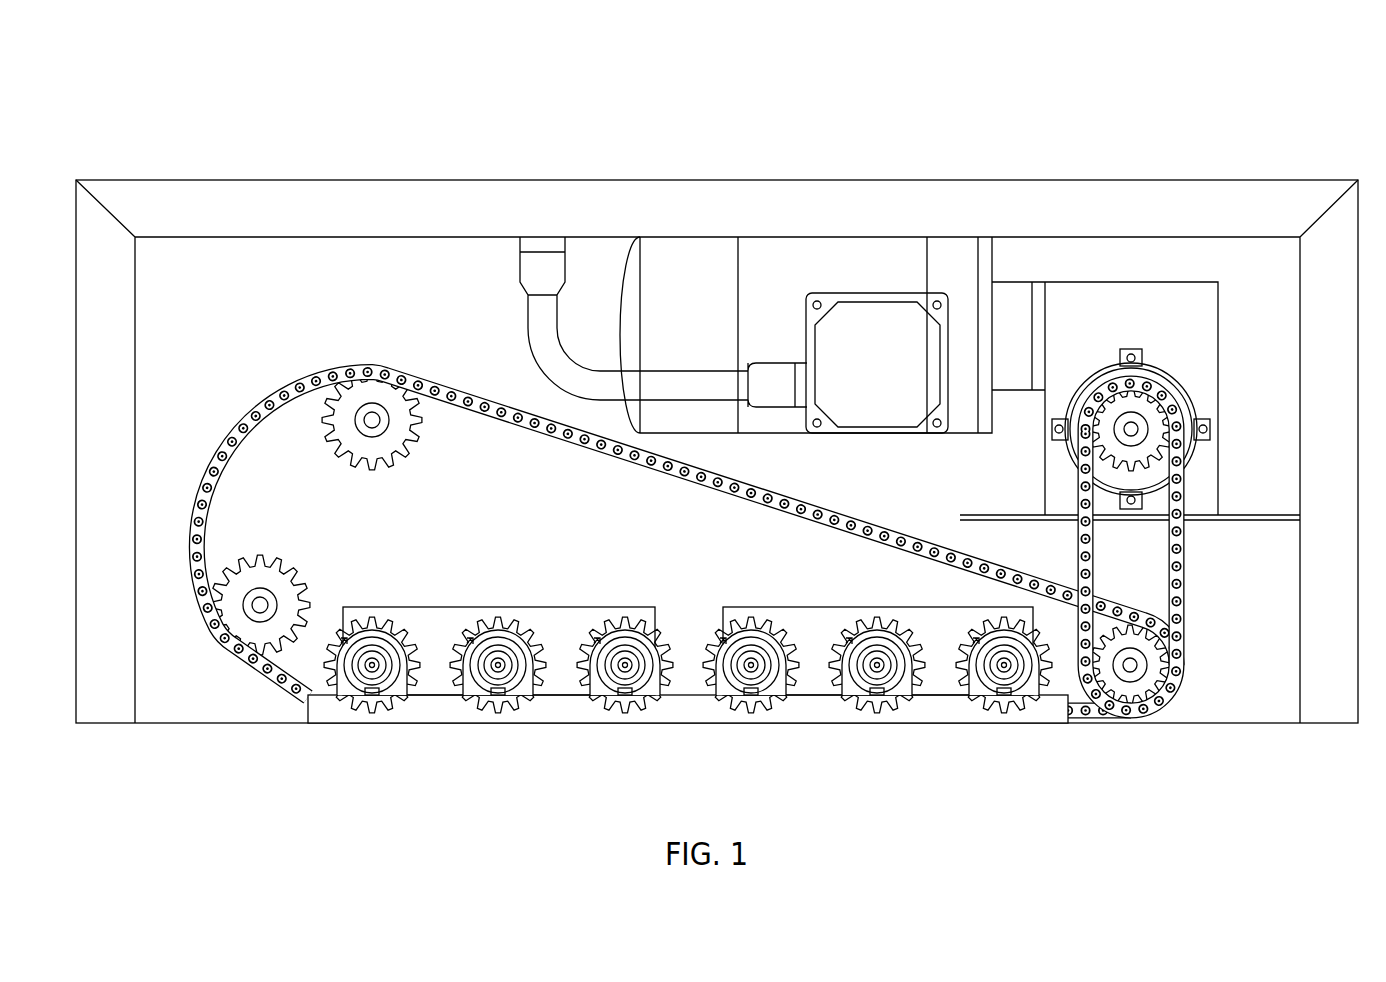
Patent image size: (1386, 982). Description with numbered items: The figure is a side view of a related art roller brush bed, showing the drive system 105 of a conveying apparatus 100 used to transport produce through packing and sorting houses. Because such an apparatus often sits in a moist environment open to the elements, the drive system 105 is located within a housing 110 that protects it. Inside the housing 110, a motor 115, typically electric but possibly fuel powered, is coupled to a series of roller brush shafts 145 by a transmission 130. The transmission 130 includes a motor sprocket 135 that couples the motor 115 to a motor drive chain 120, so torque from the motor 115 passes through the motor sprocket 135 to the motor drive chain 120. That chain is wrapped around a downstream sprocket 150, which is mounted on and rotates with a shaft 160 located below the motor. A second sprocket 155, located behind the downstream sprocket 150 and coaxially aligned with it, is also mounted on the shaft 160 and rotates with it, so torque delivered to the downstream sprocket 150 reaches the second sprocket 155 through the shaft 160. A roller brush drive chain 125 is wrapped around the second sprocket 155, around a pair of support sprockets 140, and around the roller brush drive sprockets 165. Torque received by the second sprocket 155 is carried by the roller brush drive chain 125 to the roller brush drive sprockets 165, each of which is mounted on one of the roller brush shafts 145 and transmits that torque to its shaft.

The conveying apparatus 100 is at (245, 108).
The drive system 105 is at (298, 300).
The housing 110 is at (1268, 182).
The motor 115 is at (657, 323).
The motor drive chain 120 is at (1185, 544).
The roller brush drive chain 125 is at (240, 410).
The transmission 130 is at (1238, 390).
The motor sprocket 135 is at (1135, 429).
The support sprockets 140 is at (407, 450).
The roller brush shafts 145 is at (372, 665).
The downstream sprocket 150 is at (1168, 707).
The second sprocket 155 is at (1188, 654).
The shaft 160 is at (1135, 668).
The roller brush drive sprockets 165 is at (413, 672).